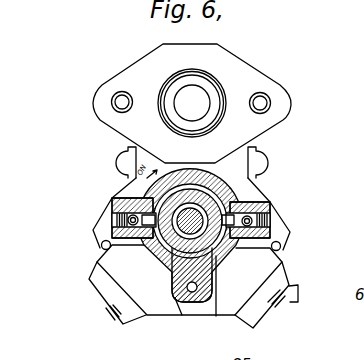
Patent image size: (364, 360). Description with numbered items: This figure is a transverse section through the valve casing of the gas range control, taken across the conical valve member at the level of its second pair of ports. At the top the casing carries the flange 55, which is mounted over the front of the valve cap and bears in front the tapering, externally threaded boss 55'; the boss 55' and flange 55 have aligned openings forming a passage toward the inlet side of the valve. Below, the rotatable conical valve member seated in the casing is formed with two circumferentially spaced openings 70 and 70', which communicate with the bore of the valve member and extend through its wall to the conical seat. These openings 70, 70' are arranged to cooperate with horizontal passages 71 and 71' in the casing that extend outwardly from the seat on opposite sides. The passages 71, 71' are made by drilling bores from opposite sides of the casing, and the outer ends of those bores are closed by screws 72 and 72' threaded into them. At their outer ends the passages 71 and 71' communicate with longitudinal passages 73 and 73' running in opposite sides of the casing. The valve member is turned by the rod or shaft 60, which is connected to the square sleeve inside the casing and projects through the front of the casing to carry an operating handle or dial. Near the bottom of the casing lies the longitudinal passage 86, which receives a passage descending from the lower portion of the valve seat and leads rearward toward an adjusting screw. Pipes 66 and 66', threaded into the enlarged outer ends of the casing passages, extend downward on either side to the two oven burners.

The flange 55 is at (188, 103).
The boss 55' is at (228, 94).
The opening 70 is at (268, 213).
The opening 70' is at (103, 213).
The screw 72 is at (294, 212).
The screw 72' is at (73, 216).
The longitudinal passage 73 is at (300, 229).
The longitudinal passage 73' is at (77, 229).
The horizontal passage 71 is at (303, 252).
The horizontal passage 71' is at (69, 258).
The pipe 66 is at (285, 300).
The pipe 66' is at (95, 293).
The longitudinal passage 86 is at (182, 315).
The rod or shaft 60 is at (222, 300).